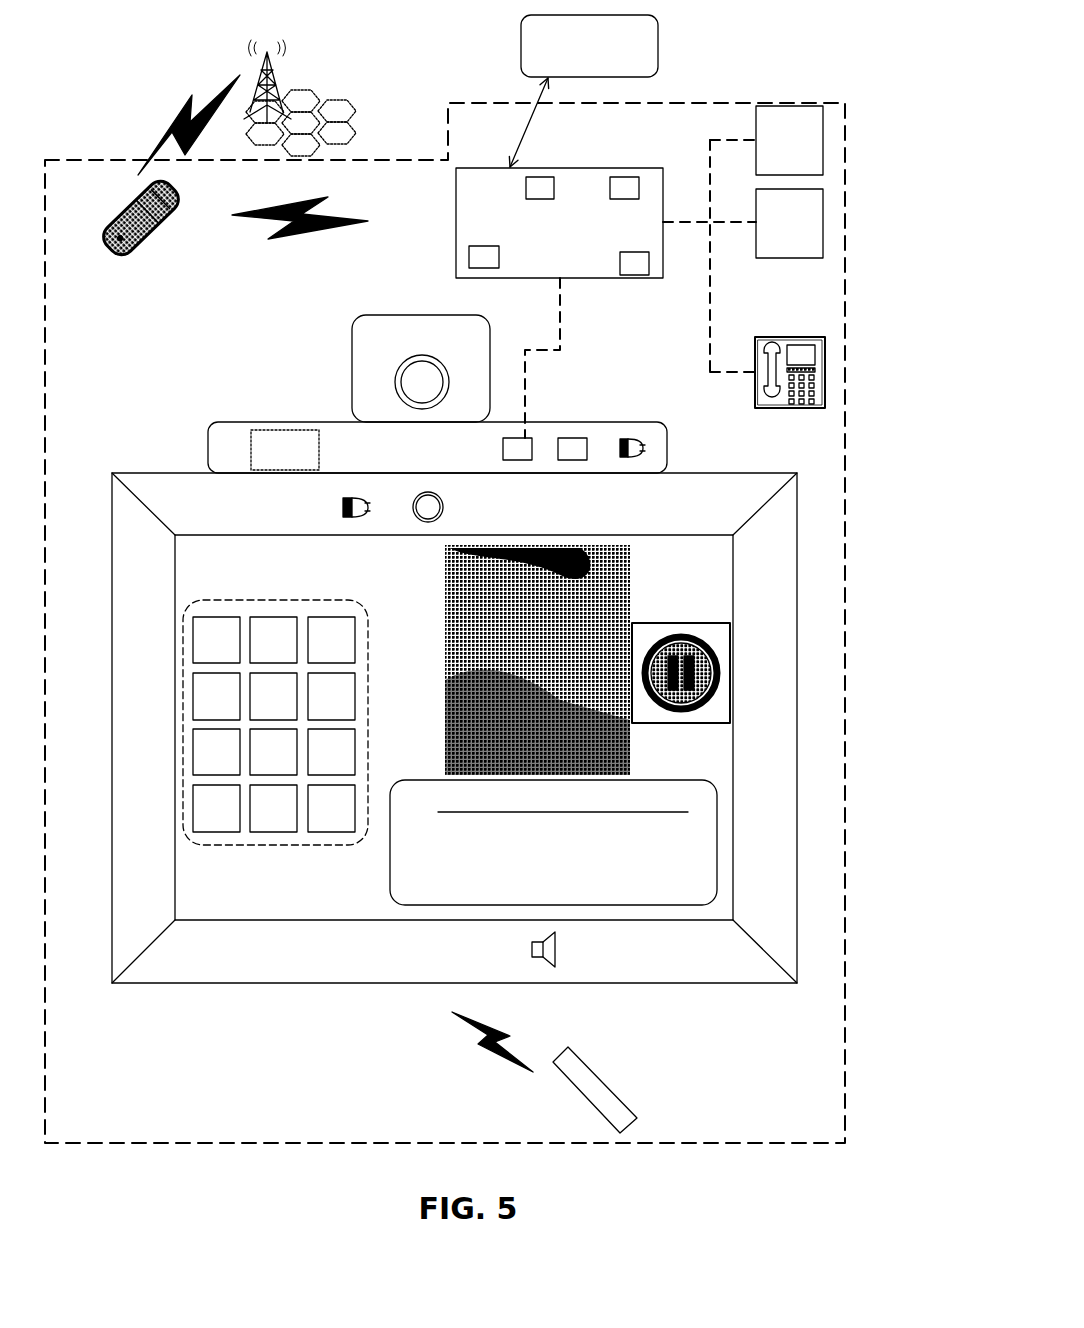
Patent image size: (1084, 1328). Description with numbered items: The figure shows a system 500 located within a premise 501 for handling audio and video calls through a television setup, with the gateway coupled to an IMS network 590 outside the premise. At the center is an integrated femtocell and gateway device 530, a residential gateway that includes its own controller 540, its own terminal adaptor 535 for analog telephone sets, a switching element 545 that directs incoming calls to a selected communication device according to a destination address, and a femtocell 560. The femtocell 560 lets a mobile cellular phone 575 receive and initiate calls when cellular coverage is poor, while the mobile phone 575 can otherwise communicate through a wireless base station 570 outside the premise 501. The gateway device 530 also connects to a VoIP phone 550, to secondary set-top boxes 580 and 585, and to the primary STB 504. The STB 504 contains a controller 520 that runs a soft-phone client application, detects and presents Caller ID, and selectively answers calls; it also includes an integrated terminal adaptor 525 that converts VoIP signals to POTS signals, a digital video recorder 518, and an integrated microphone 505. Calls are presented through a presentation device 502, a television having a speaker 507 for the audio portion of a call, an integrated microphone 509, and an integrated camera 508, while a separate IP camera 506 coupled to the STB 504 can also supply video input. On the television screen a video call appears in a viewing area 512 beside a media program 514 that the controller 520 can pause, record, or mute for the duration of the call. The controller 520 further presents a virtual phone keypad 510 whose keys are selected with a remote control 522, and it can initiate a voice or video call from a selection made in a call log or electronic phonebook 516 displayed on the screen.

The system 500 is at (445, 600).
The premise 501 is at (680, 102).
The presentation device 502 is at (235, 960).
The STB 504 is at (208, 423).
The microphone 505 is at (628, 435).
The IP camera 506 is at (367, 351).
The speaker 507 is at (560, 945).
The camera 508 is at (444, 505).
The microphone 509 is at (343, 507).
The virtual phone keypad 510 is at (367, 627).
The viewing area 512 is at (628, 602).
The media program 514 is at (710, 630).
The electronic phonebook 516 is at (705, 782).
The digital video recorder 518 is at (303, 461).
The controller 520 is at (588, 445).
The remote control 522 is at (605, 1082).
The terminal adaptor 525 is at (535, 445).
The integrated femtocell and gateway device 530 is at (540, 269).
The terminal adaptor 535 is at (637, 183).
The controller 540 is at (554, 188).
The switching element 545 is at (645, 275).
The VoIP phone 550 is at (803, 337).
The femtocell 560 is at (469, 258).
The wireless base station 570 is at (312, 92).
The mobile cellular phone 575 is at (127, 252).
The secondary STB 580 is at (772, 253).
The secondary STB 585 is at (772, 170).
The IMS network 590 is at (521, 50).